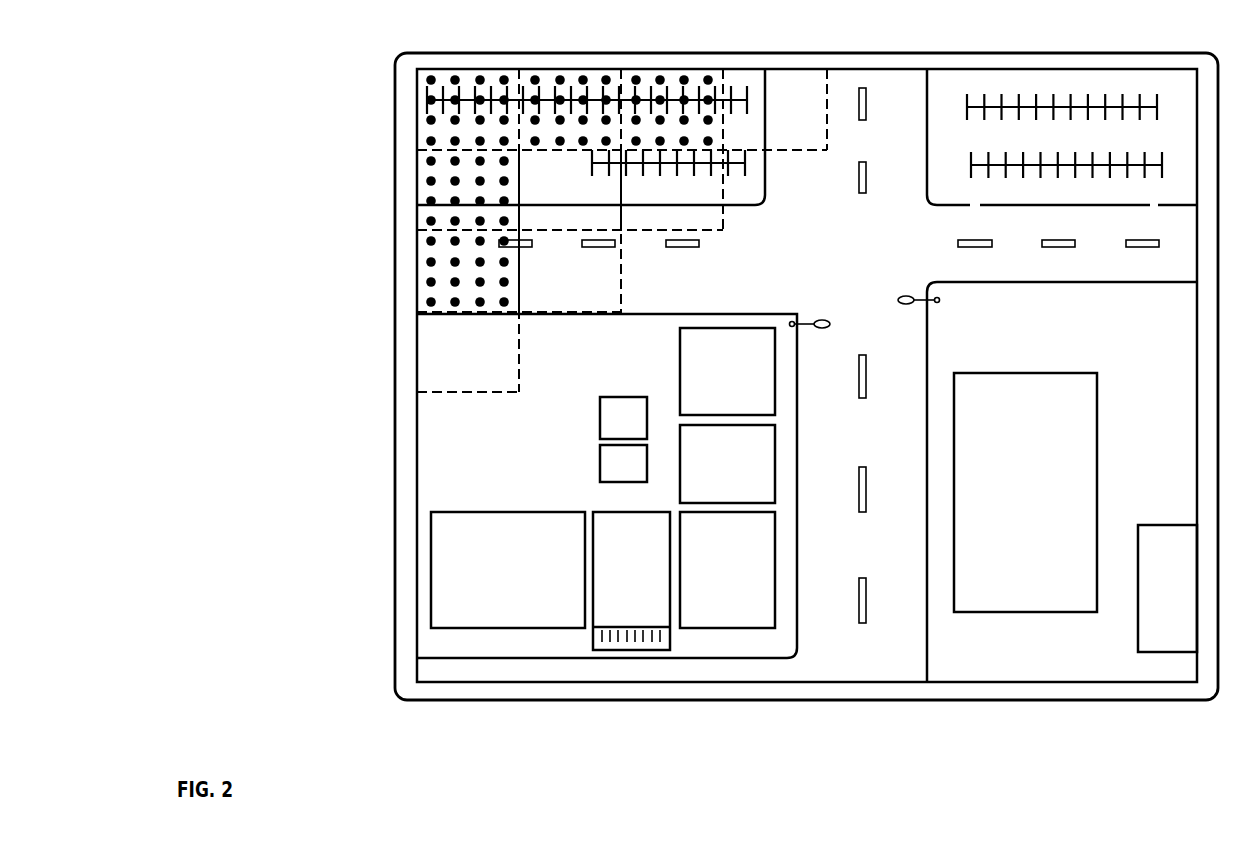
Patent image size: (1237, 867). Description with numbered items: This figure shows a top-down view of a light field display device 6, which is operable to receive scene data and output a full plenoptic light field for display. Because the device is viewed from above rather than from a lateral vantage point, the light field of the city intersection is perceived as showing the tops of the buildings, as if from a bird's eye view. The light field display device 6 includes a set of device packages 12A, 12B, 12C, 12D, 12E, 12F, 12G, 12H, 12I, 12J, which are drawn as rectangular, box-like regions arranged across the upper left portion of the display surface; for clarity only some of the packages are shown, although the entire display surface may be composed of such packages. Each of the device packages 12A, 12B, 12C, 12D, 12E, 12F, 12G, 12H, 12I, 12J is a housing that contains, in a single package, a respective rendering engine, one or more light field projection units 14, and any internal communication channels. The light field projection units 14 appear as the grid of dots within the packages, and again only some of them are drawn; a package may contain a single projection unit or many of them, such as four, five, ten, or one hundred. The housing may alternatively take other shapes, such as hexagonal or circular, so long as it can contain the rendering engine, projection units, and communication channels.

The light field display device 6 is at (1153, 52).
The device package 12A is at (442, 72).
The device package 12B is at (573, 72).
The device package 12C is at (670, 72).
The device package 12D is at (773, 72).
The device package 12E is at (426, 190).
The device package 12F is at (617, 212).
The device package 12G is at (718, 190).
The device package 12H is at (426, 268).
The device package 12I is at (600, 294).
The device package 12J is at (426, 360).
The light field projection unit 14 is at (430, 160).